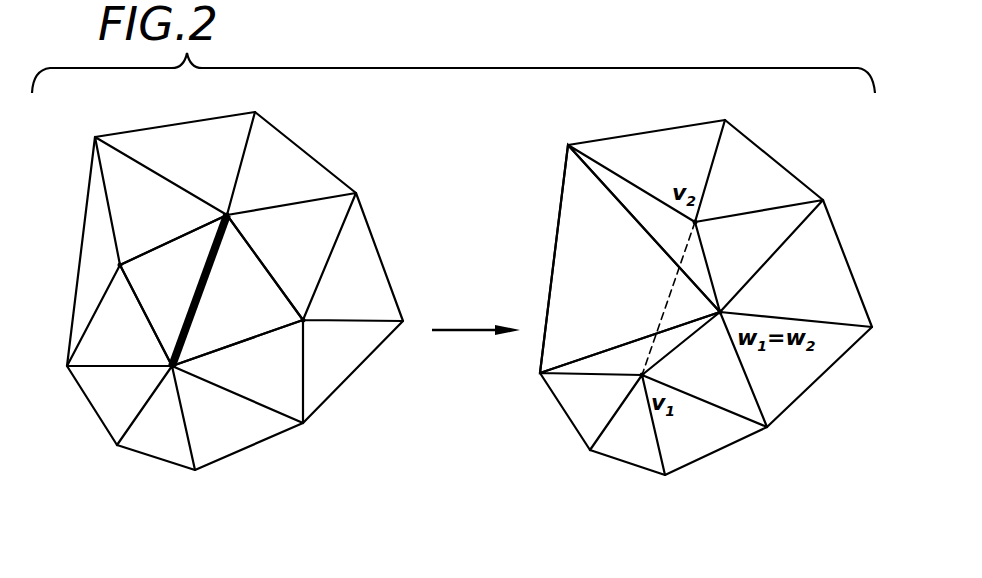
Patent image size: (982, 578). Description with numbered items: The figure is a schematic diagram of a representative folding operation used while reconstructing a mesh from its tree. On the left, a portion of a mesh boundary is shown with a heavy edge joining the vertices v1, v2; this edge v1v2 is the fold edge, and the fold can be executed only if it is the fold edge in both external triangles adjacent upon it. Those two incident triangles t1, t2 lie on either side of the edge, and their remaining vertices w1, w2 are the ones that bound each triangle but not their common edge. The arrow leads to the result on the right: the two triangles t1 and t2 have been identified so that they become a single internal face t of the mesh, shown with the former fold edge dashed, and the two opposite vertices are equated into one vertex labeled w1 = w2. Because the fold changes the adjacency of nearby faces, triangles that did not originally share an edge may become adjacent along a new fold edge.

The fold edge vertex v1 is at (188, 388).
The fold edge vertex v2 is at (217, 197).
The opposite vertex w1 is at (320, 339).
The opposite vertex w2 is at (132, 242).
The incident triangle t1 is at (237, 290).
The incident triangle t2 is at (173, 290).
The internal face t is at (630, 259).